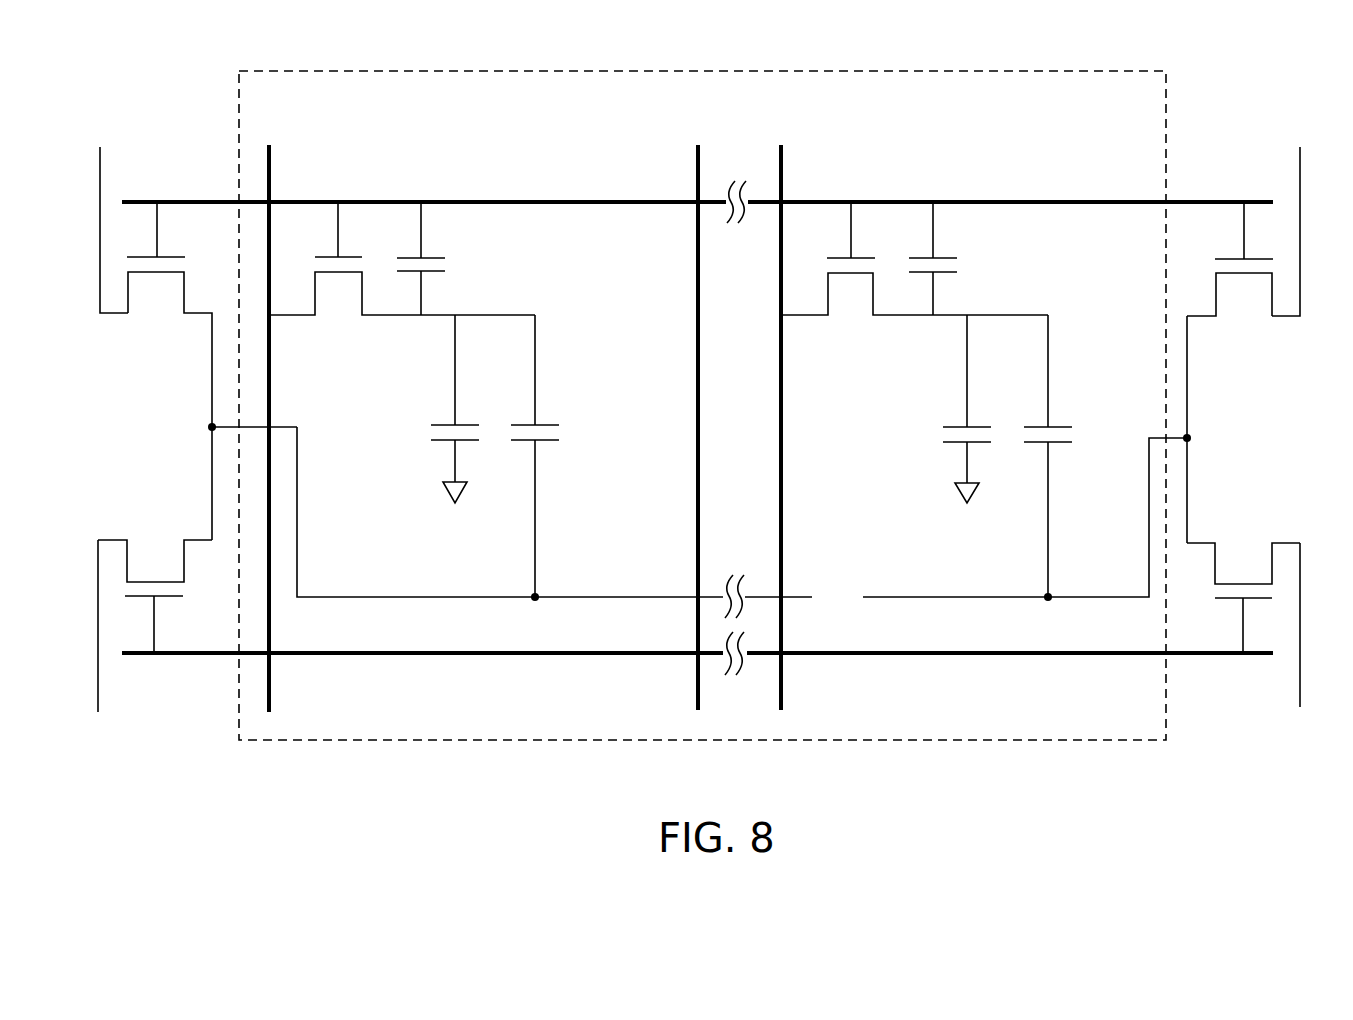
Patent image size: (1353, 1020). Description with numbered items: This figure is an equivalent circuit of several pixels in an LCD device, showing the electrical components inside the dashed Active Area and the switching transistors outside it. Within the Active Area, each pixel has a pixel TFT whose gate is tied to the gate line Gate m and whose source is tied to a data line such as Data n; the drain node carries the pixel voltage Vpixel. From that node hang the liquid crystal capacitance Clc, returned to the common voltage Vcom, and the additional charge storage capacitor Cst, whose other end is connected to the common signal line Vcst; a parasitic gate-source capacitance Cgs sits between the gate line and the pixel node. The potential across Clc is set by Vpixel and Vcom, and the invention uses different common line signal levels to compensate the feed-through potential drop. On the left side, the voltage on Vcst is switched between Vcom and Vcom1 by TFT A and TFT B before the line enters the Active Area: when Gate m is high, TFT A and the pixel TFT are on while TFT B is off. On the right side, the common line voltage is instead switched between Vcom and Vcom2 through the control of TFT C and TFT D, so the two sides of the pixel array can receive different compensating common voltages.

The active area Active Area is at (702, 429).
The gate line m Gate m is at (697, 194).
The data line n Data n is at (307, 409).
The common signal line Vcst is at (699, 520).
The common line voltage Vcom is at (698, 330).
The common voltage Vcom1 is at (105, 645).
The common voltage Vcom2 is at (1303, 645).
The switching TFT A is at (165, 371).
The switching TFT B is at (155, 576).
The switching TFT C is at (1230, 372).
The switching TFT D is at (1243, 577).
The pixel TFT is at (658, 279).
The gate-source capacitance Cgs is at (702, 258).
The liquid crystal capacitance Clc is at (691, 409).
The charge storage capacitor Cst is at (815, 456).
The pixel voltage Vpixel is at (836, 300).